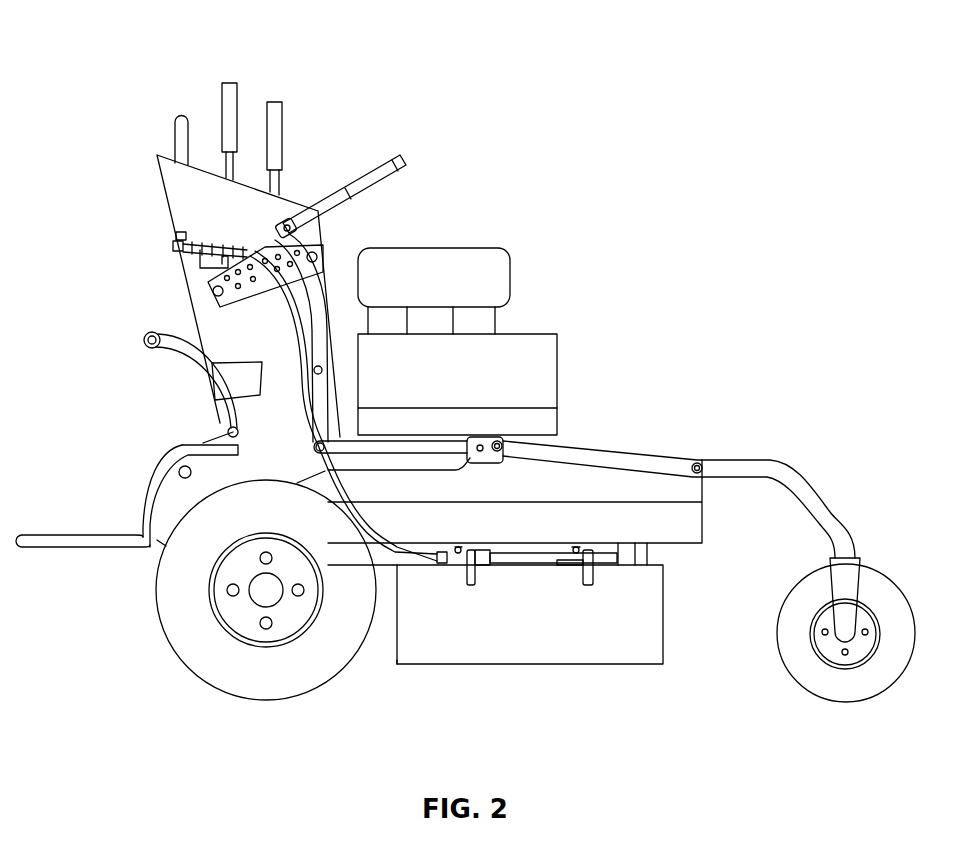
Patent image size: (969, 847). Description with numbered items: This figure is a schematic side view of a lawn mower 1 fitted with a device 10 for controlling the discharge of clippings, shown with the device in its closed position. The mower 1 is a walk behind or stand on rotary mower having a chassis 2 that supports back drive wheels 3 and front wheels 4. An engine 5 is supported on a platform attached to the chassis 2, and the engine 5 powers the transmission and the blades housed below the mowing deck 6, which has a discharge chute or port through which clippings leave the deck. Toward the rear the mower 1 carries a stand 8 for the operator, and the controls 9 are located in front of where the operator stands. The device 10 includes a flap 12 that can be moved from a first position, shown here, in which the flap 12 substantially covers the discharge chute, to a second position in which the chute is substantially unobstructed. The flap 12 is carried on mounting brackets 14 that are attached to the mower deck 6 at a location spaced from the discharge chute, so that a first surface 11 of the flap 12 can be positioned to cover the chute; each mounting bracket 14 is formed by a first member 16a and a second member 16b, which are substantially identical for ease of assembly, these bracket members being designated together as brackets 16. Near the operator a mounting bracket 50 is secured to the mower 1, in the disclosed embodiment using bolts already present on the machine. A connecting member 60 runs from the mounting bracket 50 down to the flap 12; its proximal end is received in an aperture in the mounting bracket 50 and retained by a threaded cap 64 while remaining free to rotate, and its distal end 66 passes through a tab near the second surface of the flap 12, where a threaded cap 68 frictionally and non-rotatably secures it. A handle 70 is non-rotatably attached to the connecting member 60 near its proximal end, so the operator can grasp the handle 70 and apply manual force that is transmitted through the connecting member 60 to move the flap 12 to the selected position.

The lawn mower 1 is at (618, 270).
The chassis 2 is at (735, 462).
The back drive wheels 3 is at (191, 672).
The front wheels 4 is at (885, 683).
The engine 5 is at (445, 248).
The mowing deck 6 is at (650, 543).
The stand 8 is at (75, 549).
The controls 9 is at (229, 82).
The device 10 is at (343, 287).
The first surface 11 is at (397, 657).
The flap 12 is at (553, 633).
The mounting brackets 14 is at (473, 588).
The mounting brackets 16 is at (458, 548).
The first member 16a is at (470, 548).
The second member 16b is at (590, 548).
The mounting bracket 50 is at (180, 232).
The connecting member 60 is at (290, 350).
The threaded cap 64 is at (172, 244).
The distal end 66 is at (460, 547).
The threaded cap 68 is at (483, 572).
The handle 70 is at (195, 268).